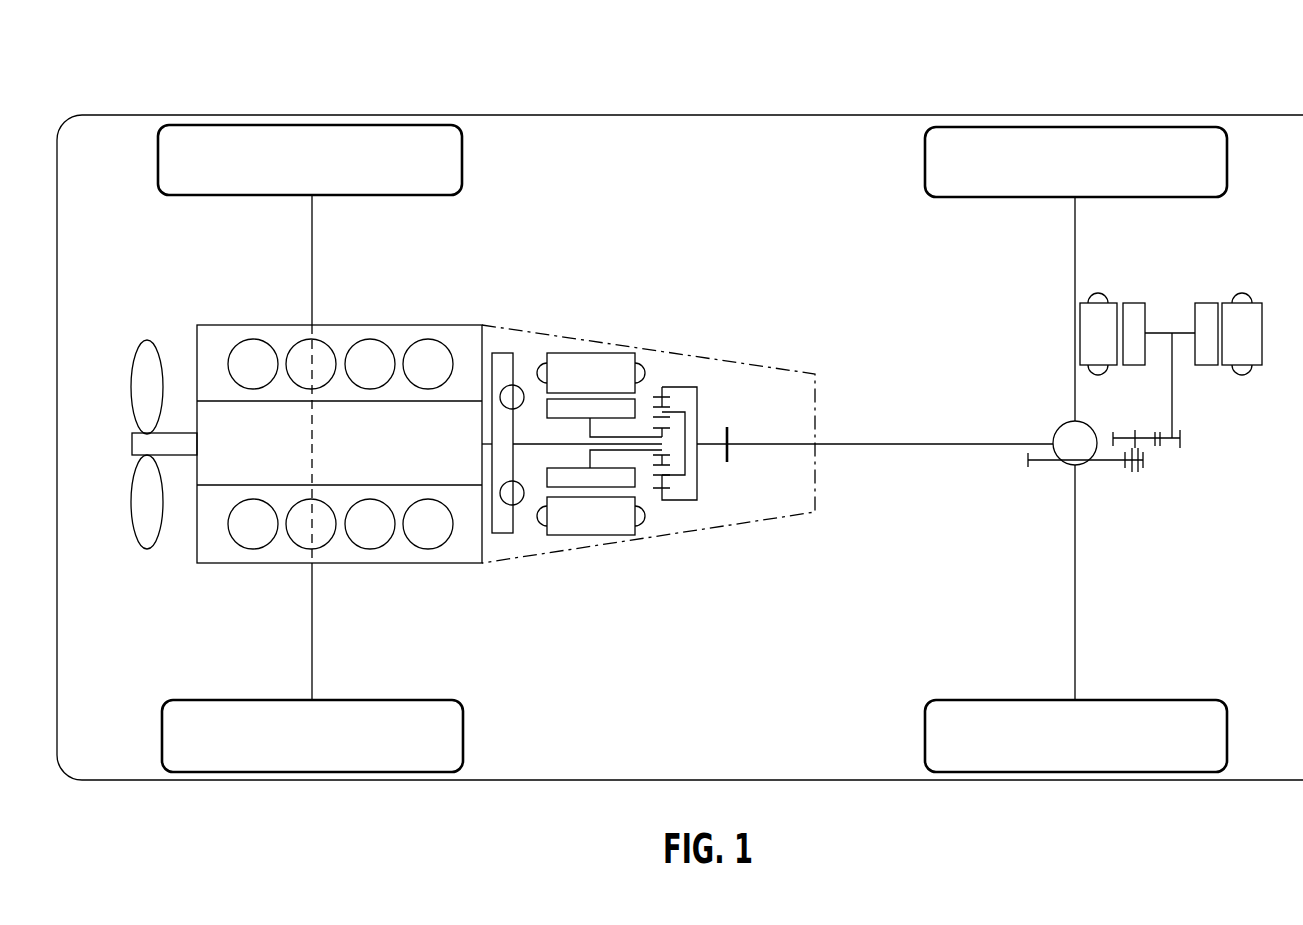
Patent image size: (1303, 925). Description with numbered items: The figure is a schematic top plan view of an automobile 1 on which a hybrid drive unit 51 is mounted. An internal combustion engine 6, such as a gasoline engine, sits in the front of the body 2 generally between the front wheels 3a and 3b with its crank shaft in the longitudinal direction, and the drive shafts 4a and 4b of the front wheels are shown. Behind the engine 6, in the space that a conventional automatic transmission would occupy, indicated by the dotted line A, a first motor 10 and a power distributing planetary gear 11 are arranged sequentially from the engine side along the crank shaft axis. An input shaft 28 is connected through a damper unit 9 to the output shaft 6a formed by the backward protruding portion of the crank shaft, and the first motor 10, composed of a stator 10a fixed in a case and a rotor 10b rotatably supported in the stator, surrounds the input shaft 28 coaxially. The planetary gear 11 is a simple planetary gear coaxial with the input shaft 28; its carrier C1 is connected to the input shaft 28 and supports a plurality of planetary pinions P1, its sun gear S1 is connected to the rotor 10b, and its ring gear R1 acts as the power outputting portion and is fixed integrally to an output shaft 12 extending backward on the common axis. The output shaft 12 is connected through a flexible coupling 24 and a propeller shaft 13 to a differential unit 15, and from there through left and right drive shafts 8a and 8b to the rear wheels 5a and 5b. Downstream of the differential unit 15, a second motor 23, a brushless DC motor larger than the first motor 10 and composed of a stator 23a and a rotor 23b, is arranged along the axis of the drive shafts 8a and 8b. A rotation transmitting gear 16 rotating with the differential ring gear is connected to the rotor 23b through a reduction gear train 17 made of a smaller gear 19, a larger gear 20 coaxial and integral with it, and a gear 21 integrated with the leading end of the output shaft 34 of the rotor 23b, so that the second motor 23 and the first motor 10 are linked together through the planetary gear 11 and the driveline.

The automobile 1 is at (797, 87).
The body 2 is at (708, 115).
The front wheel 3a is at (463, 734).
The front wheel 3b is at (462, 156).
The drive shaft 4a is at (312, 621).
The drive shaft 4b is at (312, 240).
The rear wheel 5a is at (1227, 734).
The rear wheel 5b is at (1227, 158).
The internal combustion engine 6 is at (405, 325).
The output shaft 6a is at (487, 440).
The drive shaft 8a is at (1075, 583).
The drive shaft 8b is at (1075, 258).
The damper unit 9 is at (518, 355).
The first motor 10 is at (607, 384).
The stator 10a is at (588, 362).
The rotor 10b is at (627, 410).
The power distributing planetary gear 11 is at (710, 438).
The output shaft 12 is at (713, 438).
The propeller shaft 13 is at (927, 443).
The differential unit 15 is at (1062, 422).
The rotation transmitting gear 16 is at (1041, 462).
The reduction gear train 17 is at (1146, 471).
The gear 19 is at (1143, 462).
The gear 20 is at (1137, 415).
The gear 21 is at (1172, 445).
The second motor 23 is at (1171, 294).
The stator 23a is at (1113, 303).
The rotor 23b is at (1170, 308).
The flexible coupling 24 is at (730, 430).
The input shaft 28 is at (533, 443).
The output shaft 34 is at (1173, 398).
The hybrid drive unit 51 is at (897, 286).
The dotted line A is at (568, 332).
The sun gear S1 is at (665, 452).
The carrier C1 is at (690, 470).
The ring gear R1 is at (698, 490).
The planetary pinion P1 is at (667, 480).